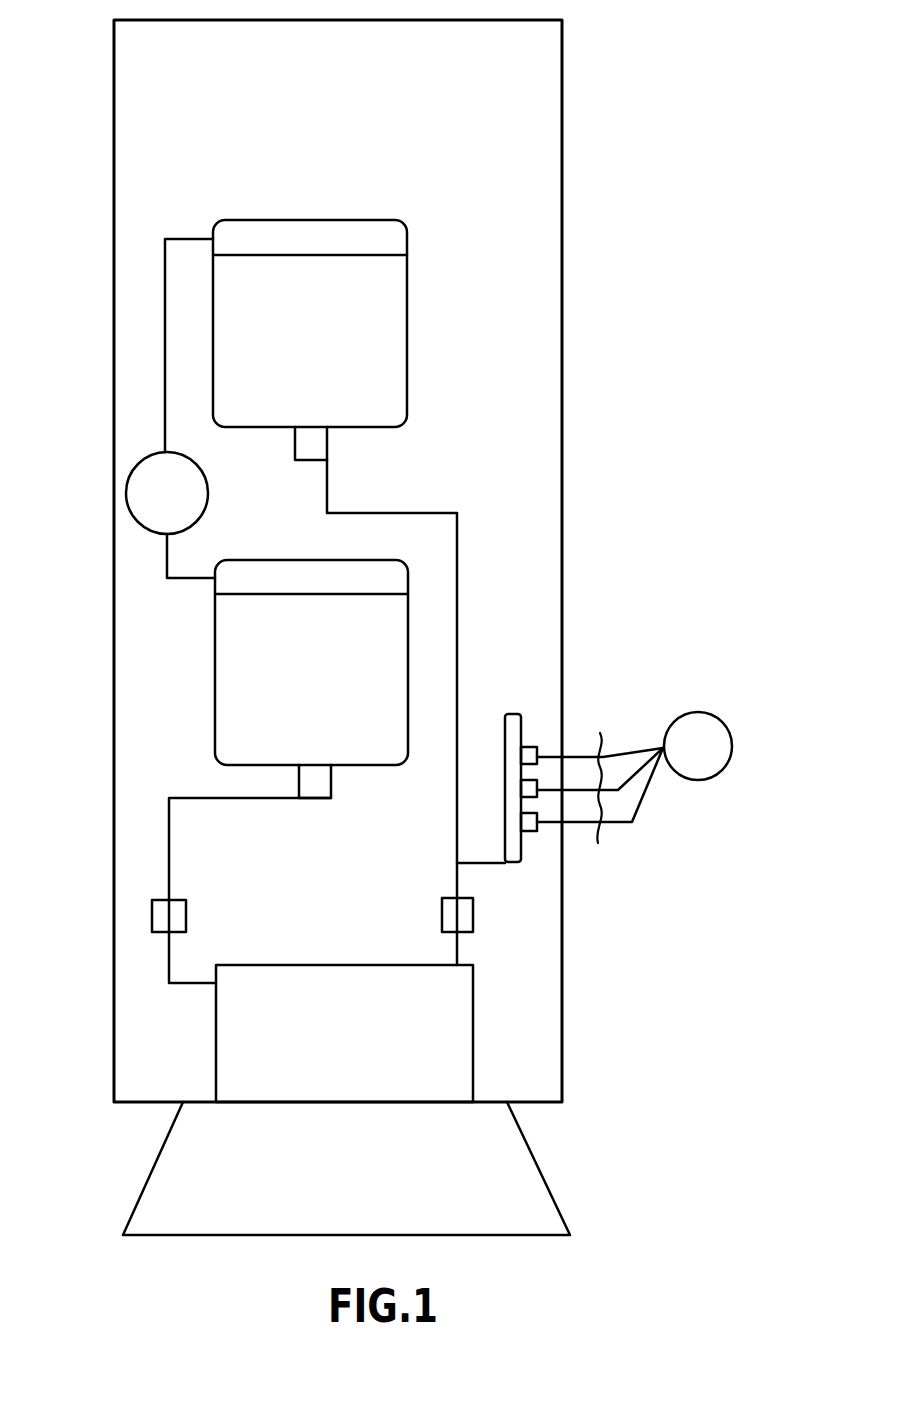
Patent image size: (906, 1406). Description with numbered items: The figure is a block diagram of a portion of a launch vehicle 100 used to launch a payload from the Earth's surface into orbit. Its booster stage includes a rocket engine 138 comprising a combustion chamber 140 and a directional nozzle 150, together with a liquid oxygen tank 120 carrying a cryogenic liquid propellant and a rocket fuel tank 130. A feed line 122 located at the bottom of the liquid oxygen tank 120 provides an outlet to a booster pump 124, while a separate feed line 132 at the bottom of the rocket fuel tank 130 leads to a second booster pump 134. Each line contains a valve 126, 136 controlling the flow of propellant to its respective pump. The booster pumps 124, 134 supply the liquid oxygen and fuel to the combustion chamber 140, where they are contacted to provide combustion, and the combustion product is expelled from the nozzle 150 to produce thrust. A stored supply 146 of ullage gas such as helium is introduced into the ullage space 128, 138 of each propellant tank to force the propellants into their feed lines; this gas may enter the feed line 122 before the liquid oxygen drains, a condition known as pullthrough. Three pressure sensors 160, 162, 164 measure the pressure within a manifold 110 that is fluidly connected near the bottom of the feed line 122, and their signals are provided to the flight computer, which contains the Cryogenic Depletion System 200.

The launch vehicle 100 is at (648, 162).
The manifold 110 is at (523, 863).
The liquid oxygen tank 120 is at (408, 333).
The feed line 122 is at (457, 545).
The booster pump 124 is at (473, 912).
The valve 126 is at (327, 440).
The ullage space 128 is at (408, 240).
The rocket fuel tank 130 is at (215, 656).
The feed line 132 is at (169, 840).
The second booster pump 134 is at (152, 908).
The valve 136 is at (299, 782).
The rocket engine 138 is at (215, 588).
The combustion chamber 140 is at (473, 1028).
The stored supply of ullage gas 146 is at (130, 470).
The directional nozzle 150 is at (550, 1185).
The pressure sensor 160 is at (528, 748).
The pressure sensor 162 is at (540, 779).
The pressure sensor 164 is at (523, 832).
The Cryogenic Depletion System 200 is at (718, 775).